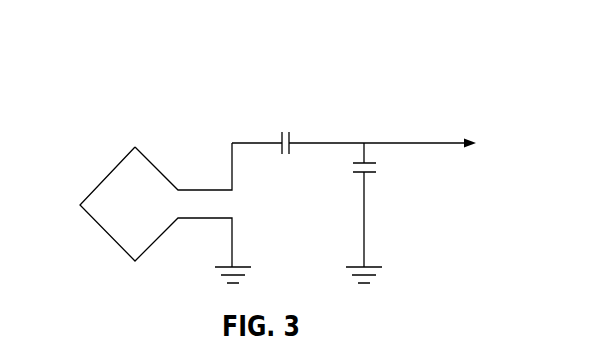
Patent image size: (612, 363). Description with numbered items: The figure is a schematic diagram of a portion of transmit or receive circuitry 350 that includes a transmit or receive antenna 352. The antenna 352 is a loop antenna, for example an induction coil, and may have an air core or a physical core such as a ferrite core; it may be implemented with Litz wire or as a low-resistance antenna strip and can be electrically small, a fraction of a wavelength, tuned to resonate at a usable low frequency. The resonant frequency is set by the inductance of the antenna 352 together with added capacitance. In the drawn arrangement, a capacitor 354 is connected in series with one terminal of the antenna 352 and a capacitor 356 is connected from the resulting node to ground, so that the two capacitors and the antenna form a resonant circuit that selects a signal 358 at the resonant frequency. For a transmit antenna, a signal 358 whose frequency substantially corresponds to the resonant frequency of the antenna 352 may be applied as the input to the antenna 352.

The transmit or receive circuitry 350 is at (176, 97).
The antenna 352 is at (108, 173).
The capacitor 354 is at (292, 141).
The capacitor 356 is at (370, 177).
The signal 358 is at (401, 141).